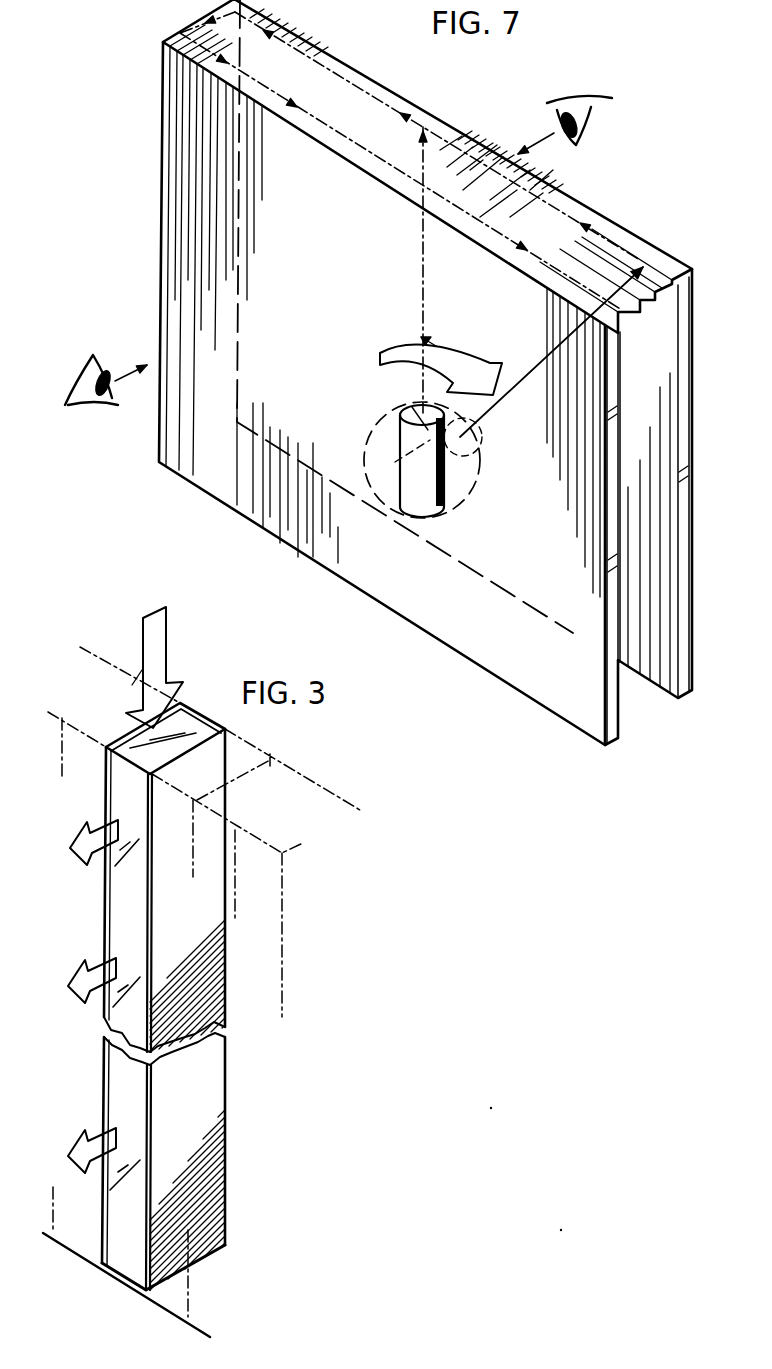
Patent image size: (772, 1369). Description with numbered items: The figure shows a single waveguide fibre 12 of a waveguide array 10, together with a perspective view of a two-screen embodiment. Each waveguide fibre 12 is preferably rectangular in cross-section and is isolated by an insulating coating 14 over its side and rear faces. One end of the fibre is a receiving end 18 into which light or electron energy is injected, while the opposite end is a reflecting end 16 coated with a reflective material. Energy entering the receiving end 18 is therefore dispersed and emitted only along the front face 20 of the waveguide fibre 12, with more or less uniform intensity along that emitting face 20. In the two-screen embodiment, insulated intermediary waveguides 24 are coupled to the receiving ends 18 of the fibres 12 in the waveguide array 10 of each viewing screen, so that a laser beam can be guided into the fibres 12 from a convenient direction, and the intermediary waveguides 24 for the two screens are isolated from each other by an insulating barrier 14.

In FIG. 7, the waveguide array 10 is at (500, 662).
In FIG. 3, the waveguide array 10 is at (258, 744).
In FIG. 3, the waveguide fibre 12 is at (107, 939).
In FIG. 3, the insulating coating 14 is at (173, 710).
In FIG. 3, the reflecting end 16 is at (205, 1262).
In FIG. 3, the receiving end 18 is at (200, 727).
In FIG. 3, the front face 20 is at (123, 903).
In FIG. 7, the intermediary waveguide 24 is at (646, 258).